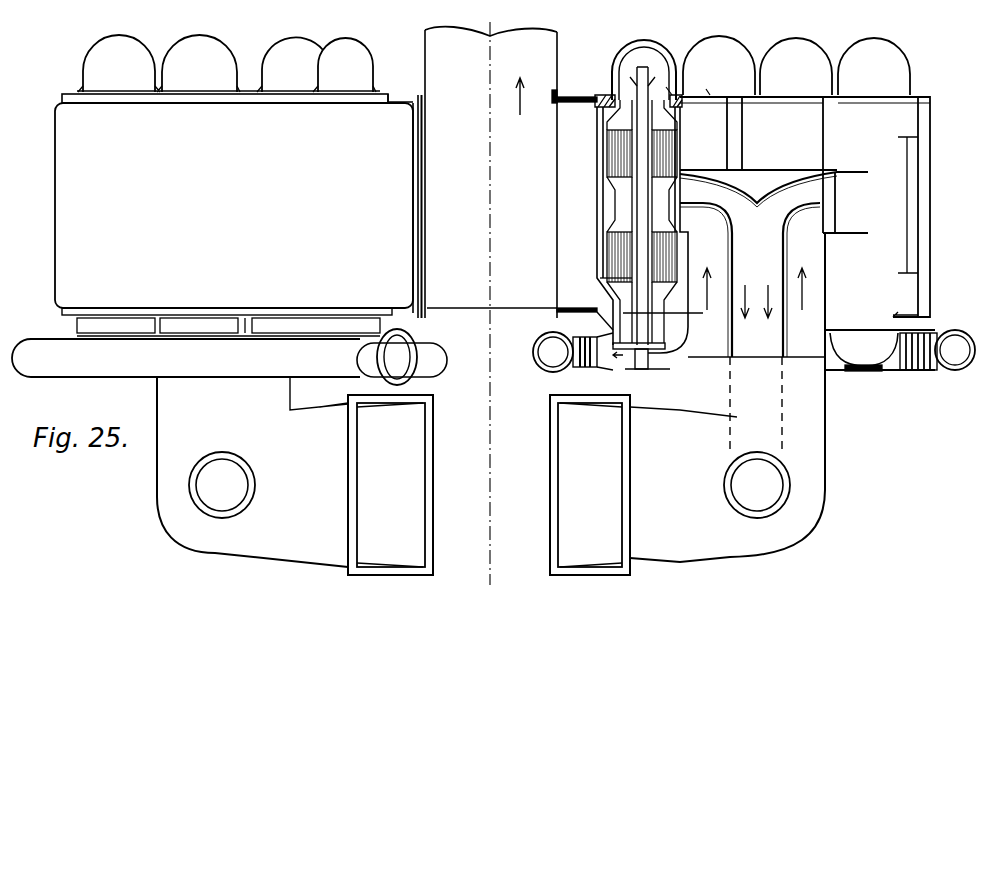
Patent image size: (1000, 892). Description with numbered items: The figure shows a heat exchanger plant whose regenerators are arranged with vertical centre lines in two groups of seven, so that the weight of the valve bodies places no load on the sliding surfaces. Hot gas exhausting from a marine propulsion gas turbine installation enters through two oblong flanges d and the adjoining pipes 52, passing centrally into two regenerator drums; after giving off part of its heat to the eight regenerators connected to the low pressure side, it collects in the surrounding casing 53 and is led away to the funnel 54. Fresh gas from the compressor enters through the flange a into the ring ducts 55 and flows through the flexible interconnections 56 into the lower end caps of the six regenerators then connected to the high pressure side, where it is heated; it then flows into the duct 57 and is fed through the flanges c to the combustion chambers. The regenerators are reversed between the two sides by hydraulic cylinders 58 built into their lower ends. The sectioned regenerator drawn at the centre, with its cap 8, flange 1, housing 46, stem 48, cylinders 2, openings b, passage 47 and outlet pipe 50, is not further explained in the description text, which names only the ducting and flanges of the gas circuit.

The valve flange / seat plate 1 is at (600, 97).
The filter cylinders (cross-hatched) 2 is at (613, 157).
The dome caps 8 is at (616, 47).
The valve housing 46 is at (617, 192).
The flow passage 47 is at (669, 313).
The valve stem 48 is at (657, 97).
The outlet pipe 50 is at (928, 369).
The pipe 52 is at (702, 354).
The surrounding casing 53 is at (308, 226).
The funnel 54 is at (446, 226).
The ring duct 55 is at (533, 356).
The flexible interconnection 56 is at (587, 370).
The duct 57 is at (744, 354).
The hydraulic cylinder 58 is at (642, 368).
The flange a is at (390, 369).
The valve openings b is at (611, 112).
The flange c is at (214, 498).
The oblong flange d is at (389, 509).